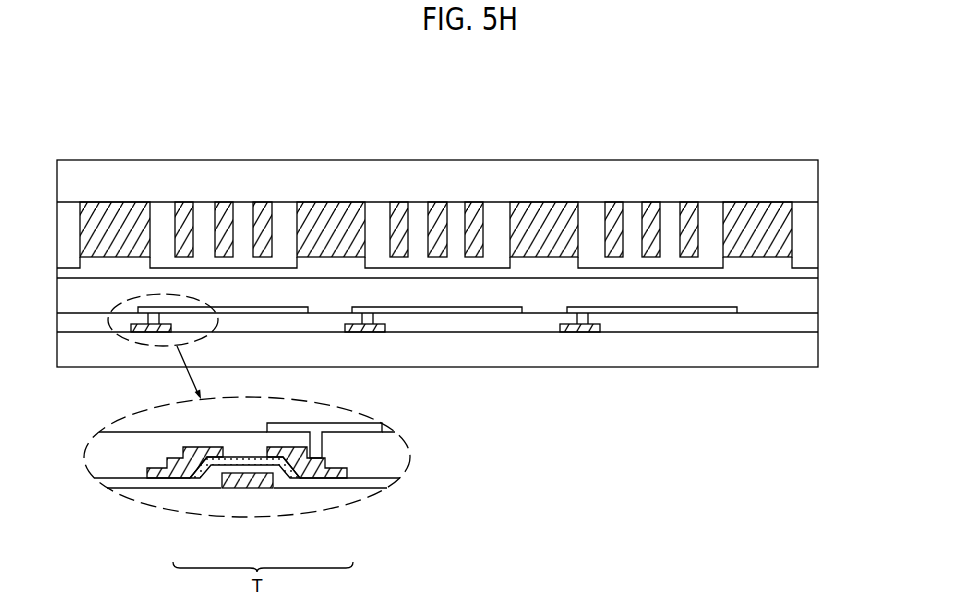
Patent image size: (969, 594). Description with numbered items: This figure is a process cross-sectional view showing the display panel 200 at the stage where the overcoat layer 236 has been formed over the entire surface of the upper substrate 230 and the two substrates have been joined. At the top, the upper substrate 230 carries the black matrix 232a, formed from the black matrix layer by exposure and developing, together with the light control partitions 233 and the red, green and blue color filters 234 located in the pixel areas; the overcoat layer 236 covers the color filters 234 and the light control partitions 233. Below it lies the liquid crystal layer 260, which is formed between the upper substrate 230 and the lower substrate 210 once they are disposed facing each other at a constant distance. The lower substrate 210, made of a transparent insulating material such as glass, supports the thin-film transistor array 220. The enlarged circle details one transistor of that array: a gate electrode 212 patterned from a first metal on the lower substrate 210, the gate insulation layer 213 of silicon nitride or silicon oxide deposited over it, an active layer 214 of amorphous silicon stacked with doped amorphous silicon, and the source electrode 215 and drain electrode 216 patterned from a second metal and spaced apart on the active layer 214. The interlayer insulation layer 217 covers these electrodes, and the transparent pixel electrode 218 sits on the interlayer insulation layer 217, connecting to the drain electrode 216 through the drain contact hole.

The display panel 200 is at (784, 113).
The upper substrate 230 is at (808, 178).
The black matrix 232a is at (537, 210).
The light control partitions 233 is at (473, 210).
The color filters 234 is at (417, 210).
The overcoat layer 236 is at (808, 271).
The liquid crystal layer 260 is at (808, 293).
The thin-film transistor array 220 is at (826, 307).
The lower substrate 210 is at (808, 357).
The pixel electrode 218 is at (352, 424).
The interlayer insulation layer 217 is at (372, 449).
The gate insulation layer 213 is at (383, 488).
The gate electrode 212 is at (250, 488).
The active layer 214 is at (294, 479).
The source electrode 215 is at (194, 480).
The drain electrode 216 is at (330, 479).